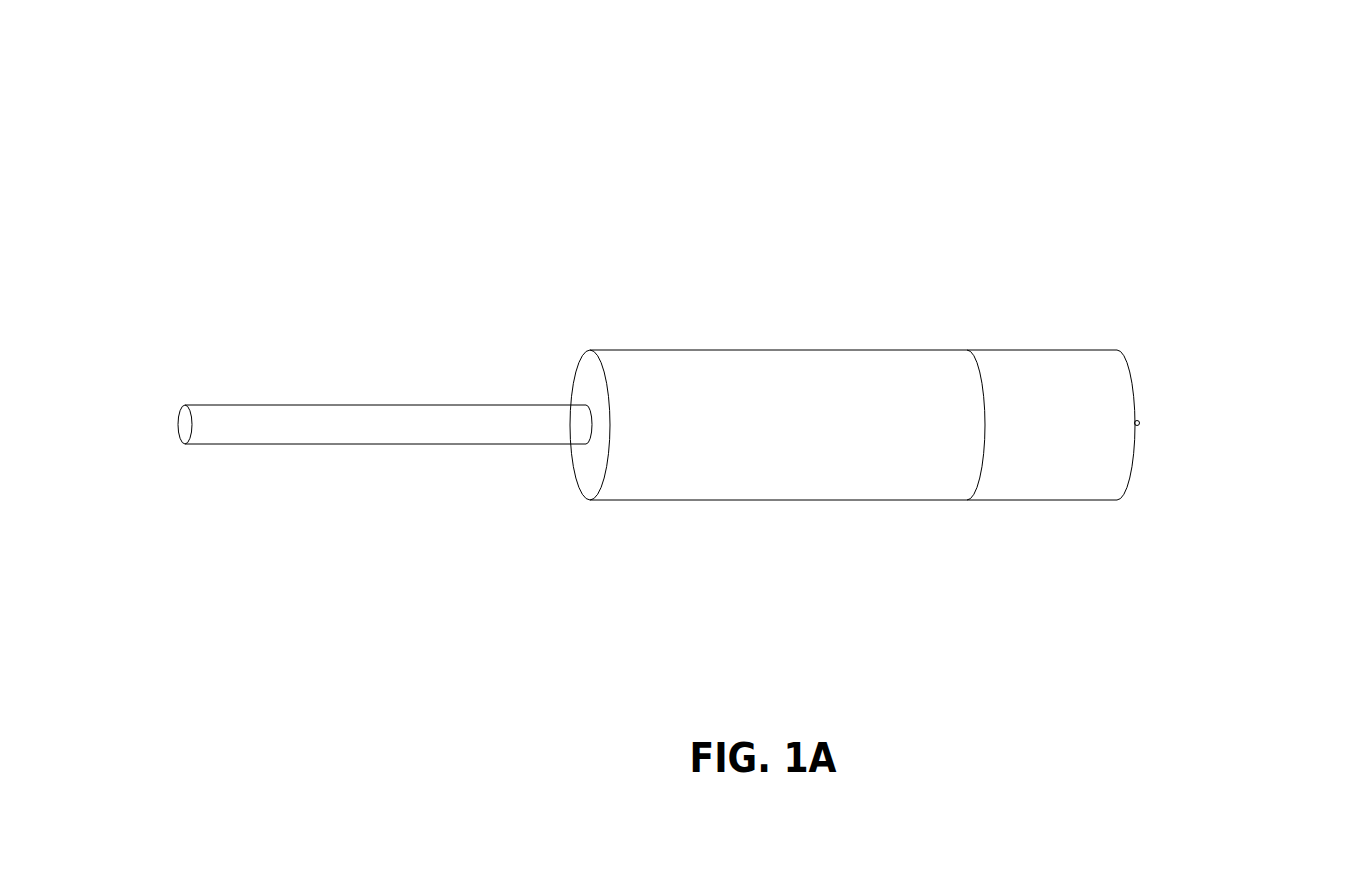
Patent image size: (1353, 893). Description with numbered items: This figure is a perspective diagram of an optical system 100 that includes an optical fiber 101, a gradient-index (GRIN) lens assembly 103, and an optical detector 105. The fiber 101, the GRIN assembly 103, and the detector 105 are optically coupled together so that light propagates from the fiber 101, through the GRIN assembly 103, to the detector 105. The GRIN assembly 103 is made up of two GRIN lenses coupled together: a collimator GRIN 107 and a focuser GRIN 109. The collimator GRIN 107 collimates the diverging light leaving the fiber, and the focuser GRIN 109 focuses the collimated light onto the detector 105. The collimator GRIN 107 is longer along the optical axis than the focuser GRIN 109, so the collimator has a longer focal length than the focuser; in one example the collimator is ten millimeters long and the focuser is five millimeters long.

The optical system 100 is at (720, 70).
The optical fiber 101 is at (297, 407).
The gradient-index (GRIN) lens assembly 103 is at (589, 342).
The optical detector 105 is at (1140, 422).
The collimator GRIN 107 is at (735, 500).
The focuser GRIN 109 is at (1034, 500).